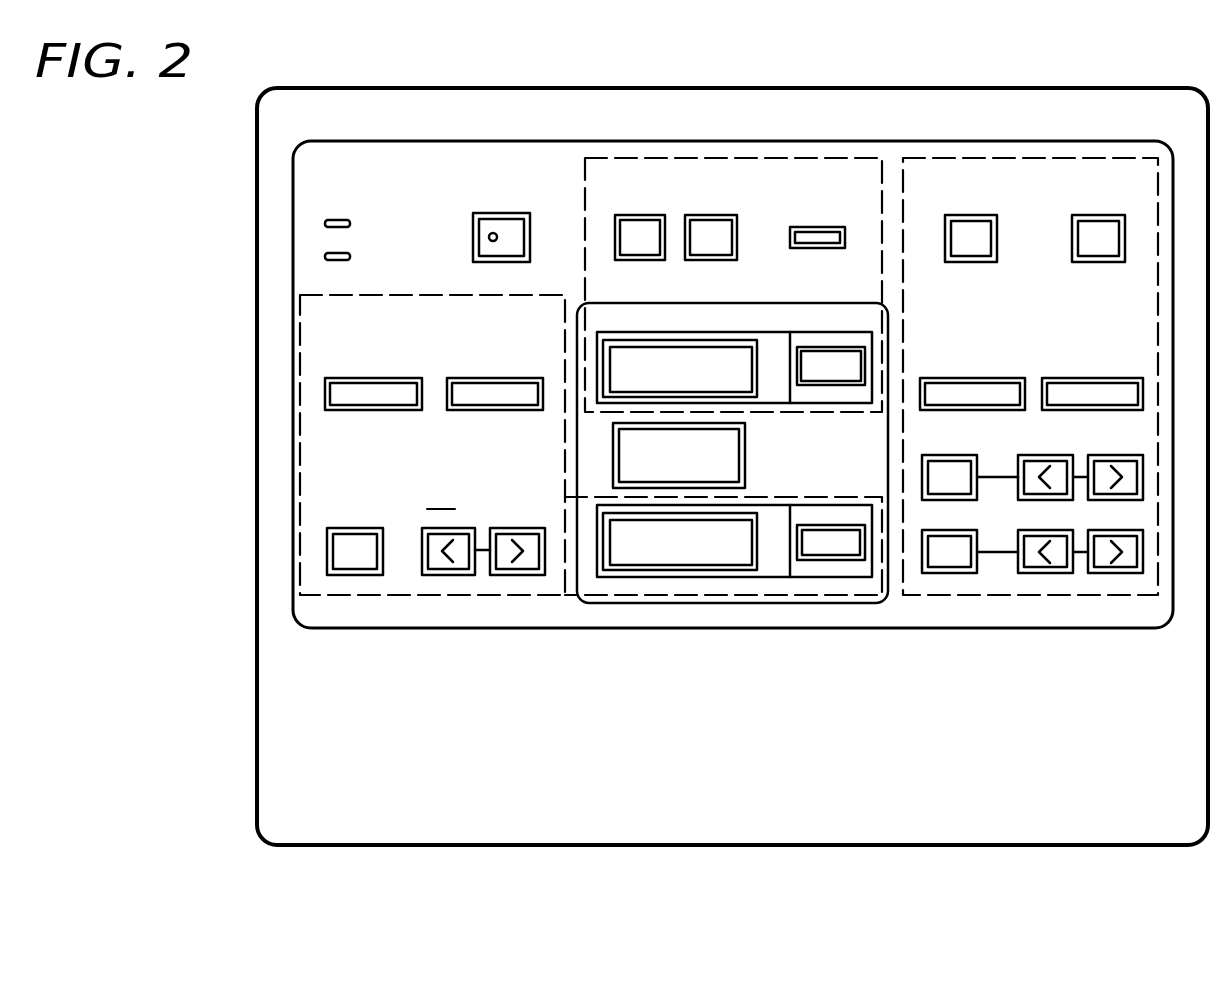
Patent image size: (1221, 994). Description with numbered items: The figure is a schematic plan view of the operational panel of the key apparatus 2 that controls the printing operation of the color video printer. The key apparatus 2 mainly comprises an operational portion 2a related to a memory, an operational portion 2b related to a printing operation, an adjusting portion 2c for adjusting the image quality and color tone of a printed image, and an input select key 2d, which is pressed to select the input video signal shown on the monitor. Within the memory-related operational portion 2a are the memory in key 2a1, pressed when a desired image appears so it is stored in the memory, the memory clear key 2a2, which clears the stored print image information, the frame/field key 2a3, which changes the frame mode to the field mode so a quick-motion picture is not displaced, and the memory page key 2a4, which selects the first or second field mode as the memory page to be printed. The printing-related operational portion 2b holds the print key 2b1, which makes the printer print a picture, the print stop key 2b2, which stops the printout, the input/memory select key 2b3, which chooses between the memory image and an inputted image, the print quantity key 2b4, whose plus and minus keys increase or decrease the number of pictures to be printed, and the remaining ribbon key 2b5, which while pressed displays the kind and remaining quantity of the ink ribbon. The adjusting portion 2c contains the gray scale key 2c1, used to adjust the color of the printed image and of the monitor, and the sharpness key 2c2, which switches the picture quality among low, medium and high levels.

The key apparatus 2 is at (910, 845).
The operational portion related to a memory 2a is at (403, 577).
The memory in key 2a1 is at (653, 560).
The memory clear key 2a2 is at (830, 547).
The frame/field key 2a3 is at (340, 392).
The memory page key 2a4 is at (478, 400).
The operational portion related to a printing operation 2b is at (780, 158).
The print key 2b1 is at (775, 343).
The print stop key 2b2 is at (833, 342).
The input/memory select key 2b3 is at (733, 455).
The print quantity key 2b4 is at (625, 238).
The remaining ribbon key 2b5 is at (840, 238).
The adjusting portion 2c is at (1083, 578).
The gray scale key 2c1 is at (1118, 237).
The sharpness key 2c2 is at (990, 240).
The input select key 2d is at (482, 240).